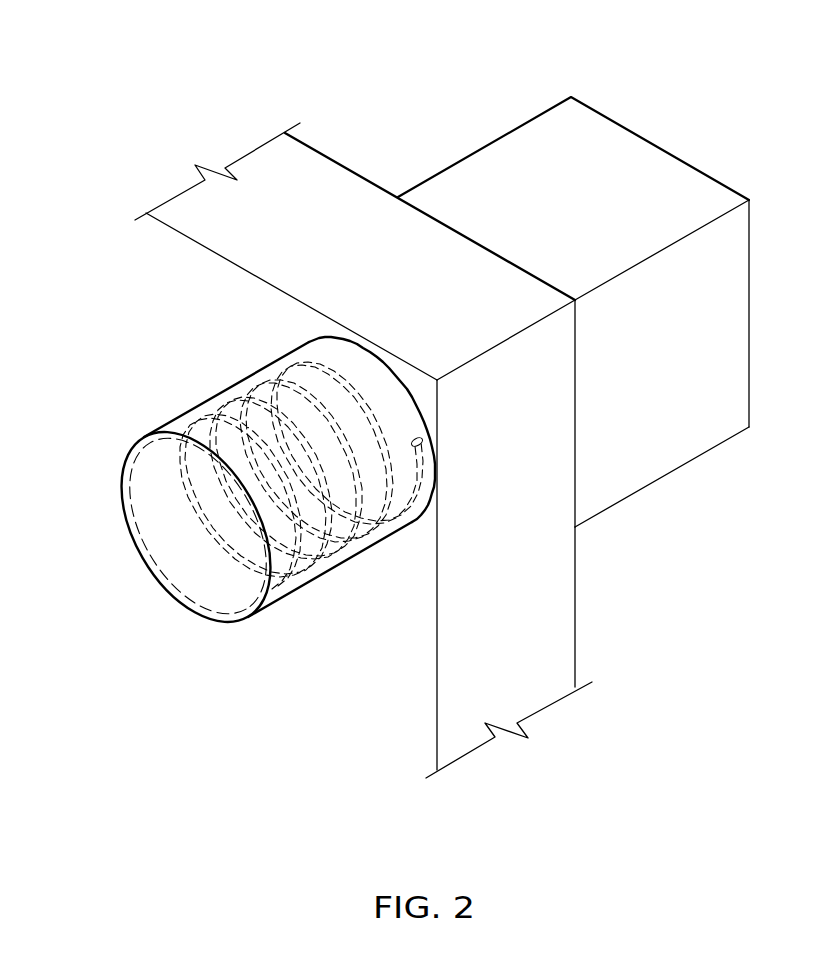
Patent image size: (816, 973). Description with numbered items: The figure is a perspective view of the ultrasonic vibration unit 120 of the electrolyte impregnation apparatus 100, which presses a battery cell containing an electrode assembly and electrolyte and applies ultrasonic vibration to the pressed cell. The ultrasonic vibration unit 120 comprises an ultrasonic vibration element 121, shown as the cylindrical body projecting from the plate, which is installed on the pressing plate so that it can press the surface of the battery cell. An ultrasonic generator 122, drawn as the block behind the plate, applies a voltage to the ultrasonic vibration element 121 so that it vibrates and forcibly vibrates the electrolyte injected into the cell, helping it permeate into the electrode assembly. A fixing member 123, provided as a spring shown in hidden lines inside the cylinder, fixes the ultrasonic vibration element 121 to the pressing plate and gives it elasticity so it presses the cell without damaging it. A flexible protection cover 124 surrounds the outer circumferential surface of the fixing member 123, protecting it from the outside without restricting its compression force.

The electrolyte impregnation apparatus 100 is at (72, 94).
The ultrasonic vibration unit 120 is at (120, 558).
The ultrasonic vibration element 121 is at (170, 588).
The ultrasonic generator 122 is at (662, 165).
The fixing member 123 is at (314, 360).
The protection cover 124 is at (332, 570).